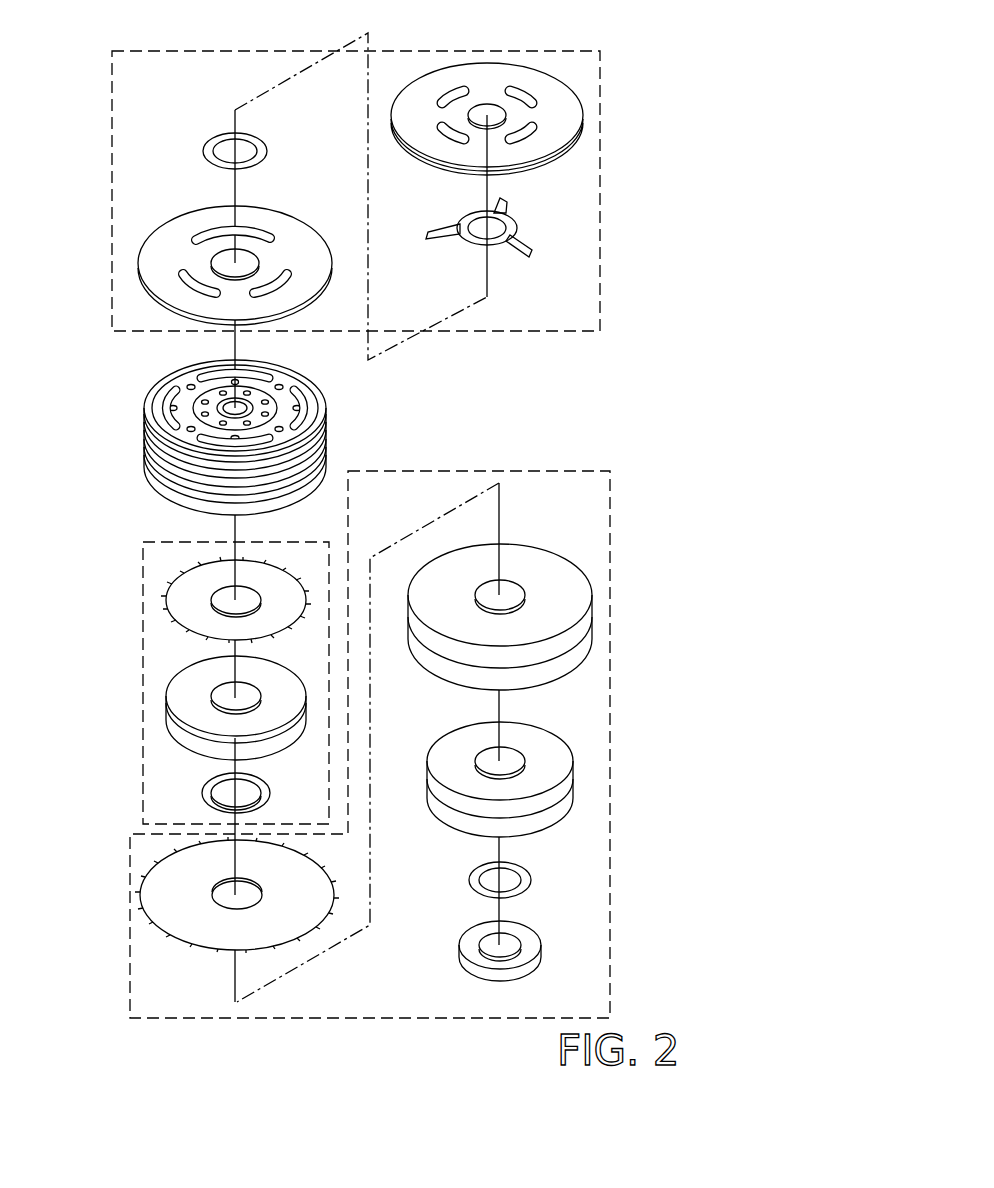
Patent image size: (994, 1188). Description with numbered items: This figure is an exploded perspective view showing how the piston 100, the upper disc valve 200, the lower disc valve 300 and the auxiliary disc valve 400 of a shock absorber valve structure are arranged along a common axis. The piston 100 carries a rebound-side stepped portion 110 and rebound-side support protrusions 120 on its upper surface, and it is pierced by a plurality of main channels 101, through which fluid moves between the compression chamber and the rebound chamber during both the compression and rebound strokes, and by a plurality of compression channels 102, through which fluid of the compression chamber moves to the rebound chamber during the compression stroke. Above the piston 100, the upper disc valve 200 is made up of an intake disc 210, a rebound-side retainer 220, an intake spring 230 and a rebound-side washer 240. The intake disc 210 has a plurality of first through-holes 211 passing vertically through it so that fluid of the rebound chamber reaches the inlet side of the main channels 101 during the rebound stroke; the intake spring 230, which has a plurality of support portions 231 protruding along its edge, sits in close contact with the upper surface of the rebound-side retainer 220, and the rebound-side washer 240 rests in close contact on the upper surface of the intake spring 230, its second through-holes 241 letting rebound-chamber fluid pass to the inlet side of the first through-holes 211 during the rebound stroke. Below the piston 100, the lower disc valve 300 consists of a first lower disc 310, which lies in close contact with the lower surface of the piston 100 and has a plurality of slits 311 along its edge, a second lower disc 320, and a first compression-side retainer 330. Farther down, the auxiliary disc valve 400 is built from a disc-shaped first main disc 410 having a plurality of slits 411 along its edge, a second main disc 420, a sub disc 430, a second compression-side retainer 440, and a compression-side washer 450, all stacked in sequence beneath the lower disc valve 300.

The piston 100 is at (253, 424).
The main channels 101 is at (200, 412).
The compression channels 102 is at (170, 404).
The rebound-side stepped portion 110 is at (243, 393).
The rebound-side support protrusions 120 is at (276, 390).
The upper disc valve 200 is at (603, 160).
The intake disc 210 is at (195, 265).
The first through-holes 211 is at (185, 268).
The rebound-side retainer 220 is at (206, 148).
The intake spring 230 is at (541, 237).
The support portions 231 is at (533, 240).
The rebound-side washer 240 is at (523, 89).
The second through-holes 241 is at (450, 96).
The lower disc valve 300 is at (143, 680).
The first lower disc 310 is at (195, 600).
The slits 311 is at (172, 612).
The second lower disc 320 is at (178, 700).
The first compression-side retainer 330 is at (204, 789).
The auxiliary disc valve 400 is at (612, 745).
The first main disc 410 is at (207, 895).
The slits 411 is at (148, 894).
The second main disc 420 is at (578, 580).
The sub disc 430 is at (553, 740).
The second compression-side retainer 440 is at (532, 878).
The compression-side washer 450 is at (535, 935).